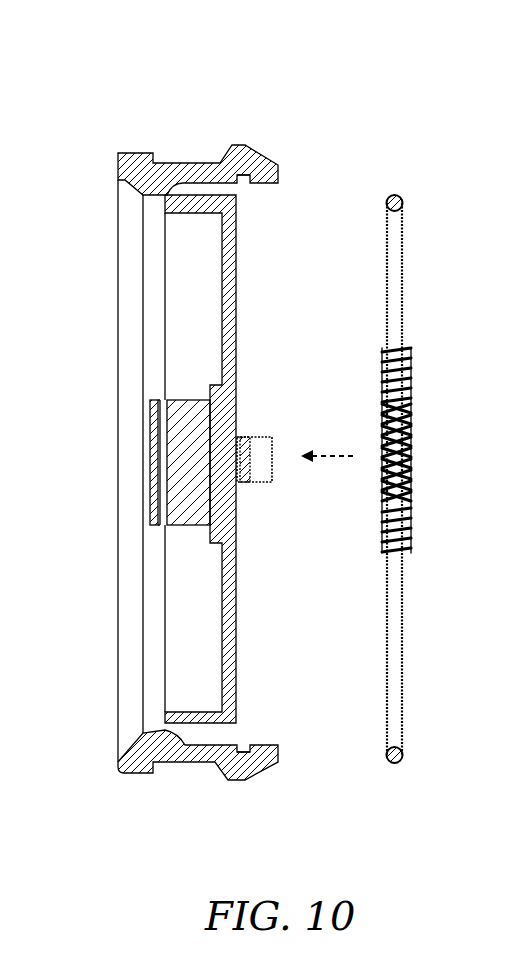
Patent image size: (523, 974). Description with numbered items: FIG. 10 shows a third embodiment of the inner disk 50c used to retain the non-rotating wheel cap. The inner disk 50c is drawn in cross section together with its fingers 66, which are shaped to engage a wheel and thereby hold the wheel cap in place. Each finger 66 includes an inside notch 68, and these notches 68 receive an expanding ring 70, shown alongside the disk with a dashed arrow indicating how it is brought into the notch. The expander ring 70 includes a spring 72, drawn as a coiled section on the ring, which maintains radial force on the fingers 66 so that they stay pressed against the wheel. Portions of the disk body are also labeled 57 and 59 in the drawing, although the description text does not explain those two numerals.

The inner disk 50c is at (118, 117).
The housing 57 is at (182, 196).
The retaining ring 59 is at (200, 149).
The fingers 66 is at (255, 162).
The inside notch 68 is at (240, 178).
The expanding ring 70 is at (388, 258).
The spring 72 is at (412, 440).